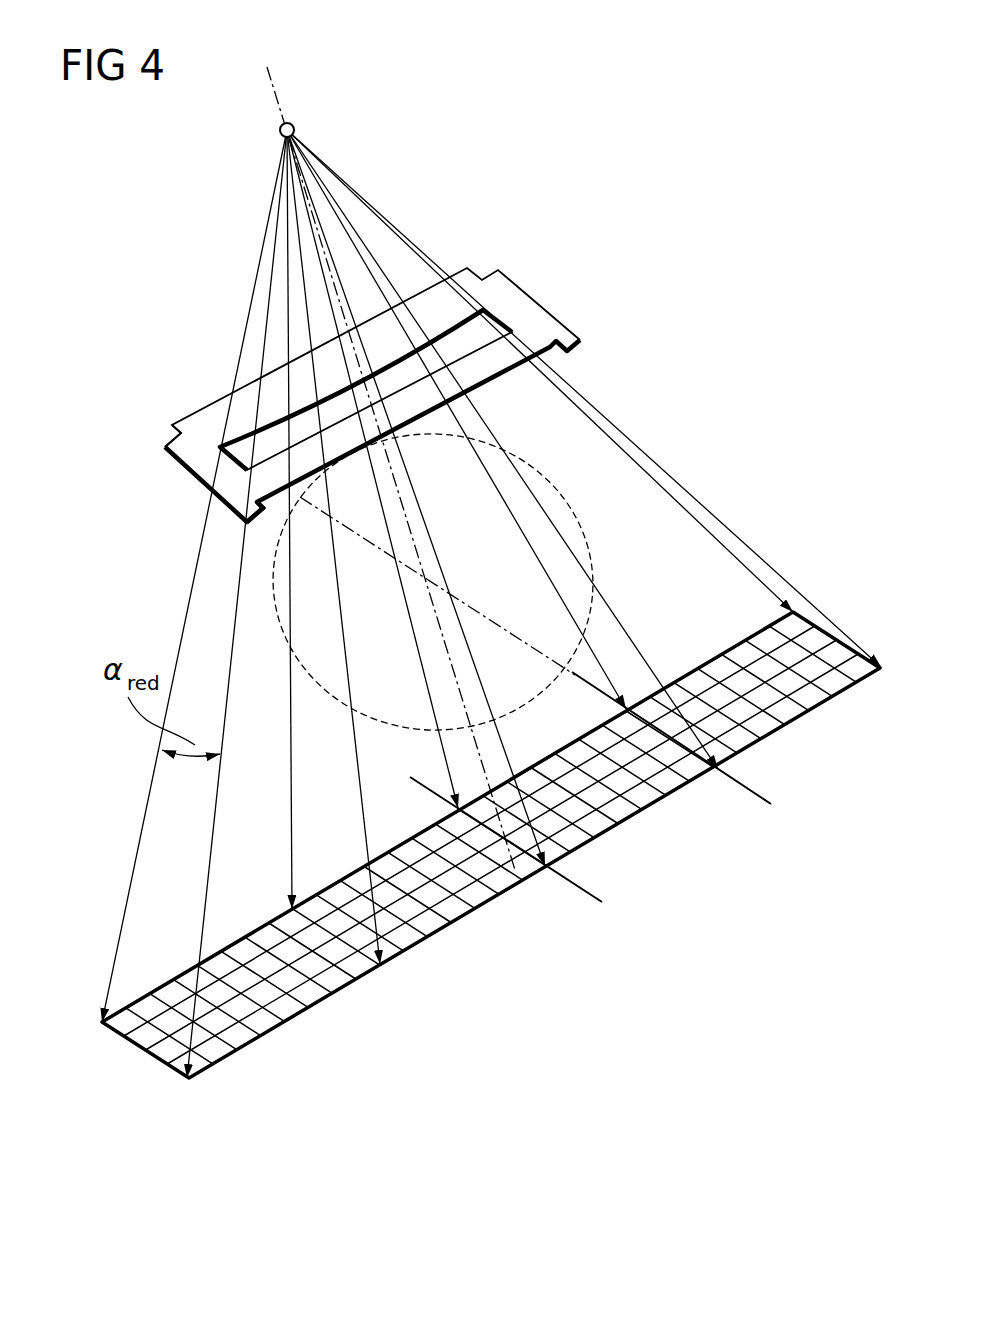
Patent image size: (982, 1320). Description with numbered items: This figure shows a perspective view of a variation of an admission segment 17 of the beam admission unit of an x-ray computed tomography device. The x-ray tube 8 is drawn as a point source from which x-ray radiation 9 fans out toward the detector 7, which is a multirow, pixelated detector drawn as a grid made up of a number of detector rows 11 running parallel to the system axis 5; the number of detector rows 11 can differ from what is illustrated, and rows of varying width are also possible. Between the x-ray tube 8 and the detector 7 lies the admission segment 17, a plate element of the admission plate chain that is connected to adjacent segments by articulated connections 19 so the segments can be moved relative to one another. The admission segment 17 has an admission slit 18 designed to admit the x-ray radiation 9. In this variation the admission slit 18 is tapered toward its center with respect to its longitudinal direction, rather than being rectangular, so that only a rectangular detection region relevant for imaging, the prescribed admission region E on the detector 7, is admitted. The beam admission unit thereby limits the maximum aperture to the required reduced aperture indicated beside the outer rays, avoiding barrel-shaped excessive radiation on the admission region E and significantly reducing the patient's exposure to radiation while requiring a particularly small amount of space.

The system axis 5 is at (487, 617).
The detector 7 is at (822, 707).
The x-ray tube 8 is at (301, 125).
The x-ray radiation 9 is at (357, 233).
The detector rows 11 is at (118, 1058).
The admission segment 17 is at (488, 278).
The admission slit 18 is at (482, 330).
The articulated connection 19 is at (165, 440).
The admission region E is at (263, 940).